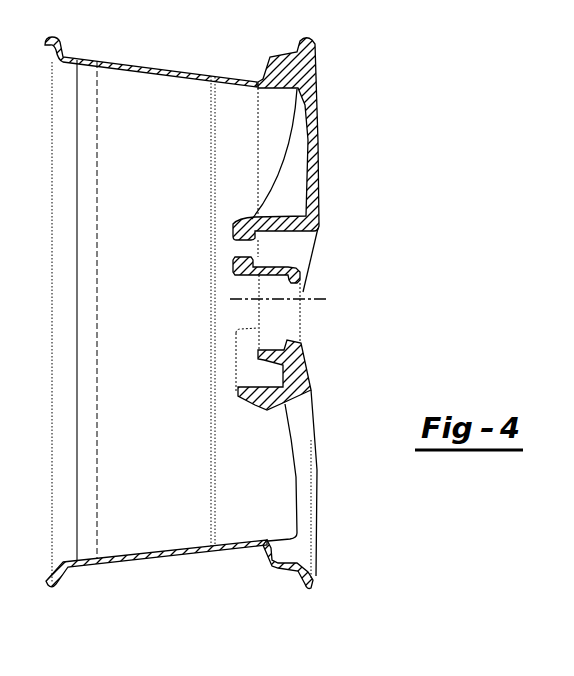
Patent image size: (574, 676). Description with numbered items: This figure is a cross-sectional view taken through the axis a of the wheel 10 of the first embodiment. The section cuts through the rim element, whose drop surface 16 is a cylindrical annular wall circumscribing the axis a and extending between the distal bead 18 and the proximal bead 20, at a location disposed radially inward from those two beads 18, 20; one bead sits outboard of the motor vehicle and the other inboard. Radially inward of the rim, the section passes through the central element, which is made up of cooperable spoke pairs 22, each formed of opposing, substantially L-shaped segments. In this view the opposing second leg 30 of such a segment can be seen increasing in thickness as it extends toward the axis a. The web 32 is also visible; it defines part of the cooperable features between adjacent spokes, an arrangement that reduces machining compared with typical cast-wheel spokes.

The wheel 10 is at (343, 67).
The drop surface 16 is at (173, 67).
The distal bead 18 is at (50, 589).
The proximal bead 20 is at (310, 590).
The spoke pair 22 is at (313, 127).
The second leg 30 is at (280, 208).
The web 32 is at (260, 382).
The axis a is at (286, 299).